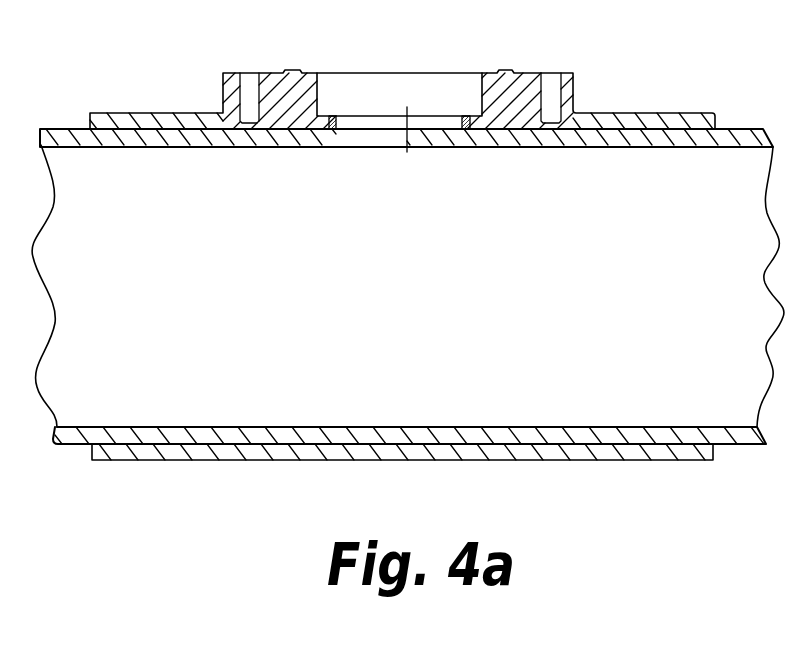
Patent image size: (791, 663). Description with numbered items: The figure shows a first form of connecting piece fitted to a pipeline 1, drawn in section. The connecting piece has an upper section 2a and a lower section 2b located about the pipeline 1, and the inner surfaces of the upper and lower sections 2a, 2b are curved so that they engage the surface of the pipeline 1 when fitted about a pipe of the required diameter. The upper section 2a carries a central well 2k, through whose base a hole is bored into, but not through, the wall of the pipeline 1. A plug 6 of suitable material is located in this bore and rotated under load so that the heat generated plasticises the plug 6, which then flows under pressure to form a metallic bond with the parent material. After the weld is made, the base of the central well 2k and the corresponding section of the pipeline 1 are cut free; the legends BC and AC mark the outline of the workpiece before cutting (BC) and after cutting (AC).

The pipeline 1 is at (74, 437).
The upper section 2a is at (623, 122).
The lower section 2b is at (362, 452).
The central well 2k is at (435, 87).
The plug 6 is at (463, 117).
The outline after cutting AC is at (369, 160).
The outline before cutting BC is at (443, 160).